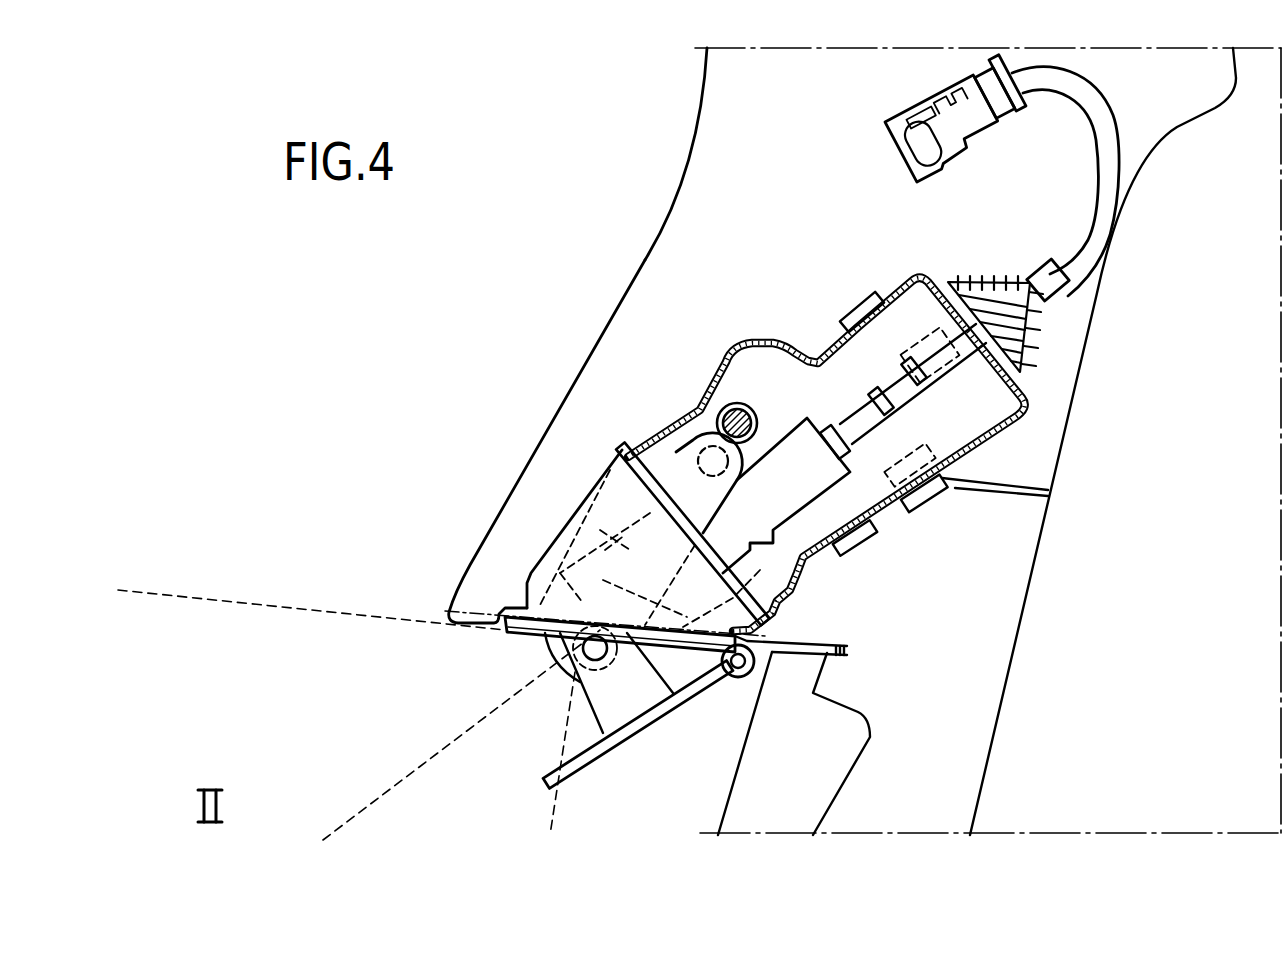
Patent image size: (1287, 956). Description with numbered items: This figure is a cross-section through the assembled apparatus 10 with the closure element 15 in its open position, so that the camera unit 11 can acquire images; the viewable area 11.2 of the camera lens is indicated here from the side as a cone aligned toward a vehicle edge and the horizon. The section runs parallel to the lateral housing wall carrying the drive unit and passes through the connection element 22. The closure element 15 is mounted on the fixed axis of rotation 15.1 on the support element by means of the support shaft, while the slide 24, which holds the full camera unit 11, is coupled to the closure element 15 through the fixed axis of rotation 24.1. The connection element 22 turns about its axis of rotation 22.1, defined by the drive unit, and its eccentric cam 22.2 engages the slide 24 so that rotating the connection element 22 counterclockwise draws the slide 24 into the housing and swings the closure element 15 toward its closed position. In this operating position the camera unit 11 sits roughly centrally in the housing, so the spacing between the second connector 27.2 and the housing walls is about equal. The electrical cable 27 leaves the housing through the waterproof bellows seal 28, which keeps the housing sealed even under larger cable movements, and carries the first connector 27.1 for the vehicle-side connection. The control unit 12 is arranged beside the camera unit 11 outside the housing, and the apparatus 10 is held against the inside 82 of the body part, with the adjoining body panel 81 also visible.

The apparatus 10 is at (831, 225).
The camera unit 11 is at (538, 525).
The viewable area 11.2 is at (213, 602).
The control unit 12 is at (545, 583).
The closure element 15 is at (633, 755).
The fixed axis of rotation 15.1 is at (728, 668).
The connection element 22 is at (750, 445).
The axis of rotation 22.1 is at (736, 403).
The eccentric cam 22.2 is at (706, 447).
The slide 24 is at (647, 558).
The fixed axis of rotation 24.1 is at (573, 663).
The electrical cable 27 is at (1108, 78).
The first connector 27.1 is at (951, 126).
The second connector 27.2 is at (822, 465).
The bellows seal 28 is at (1013, 285).
The seat panel 81 is at (528, 443).
The inside of the body part 82 is at (708, 154).